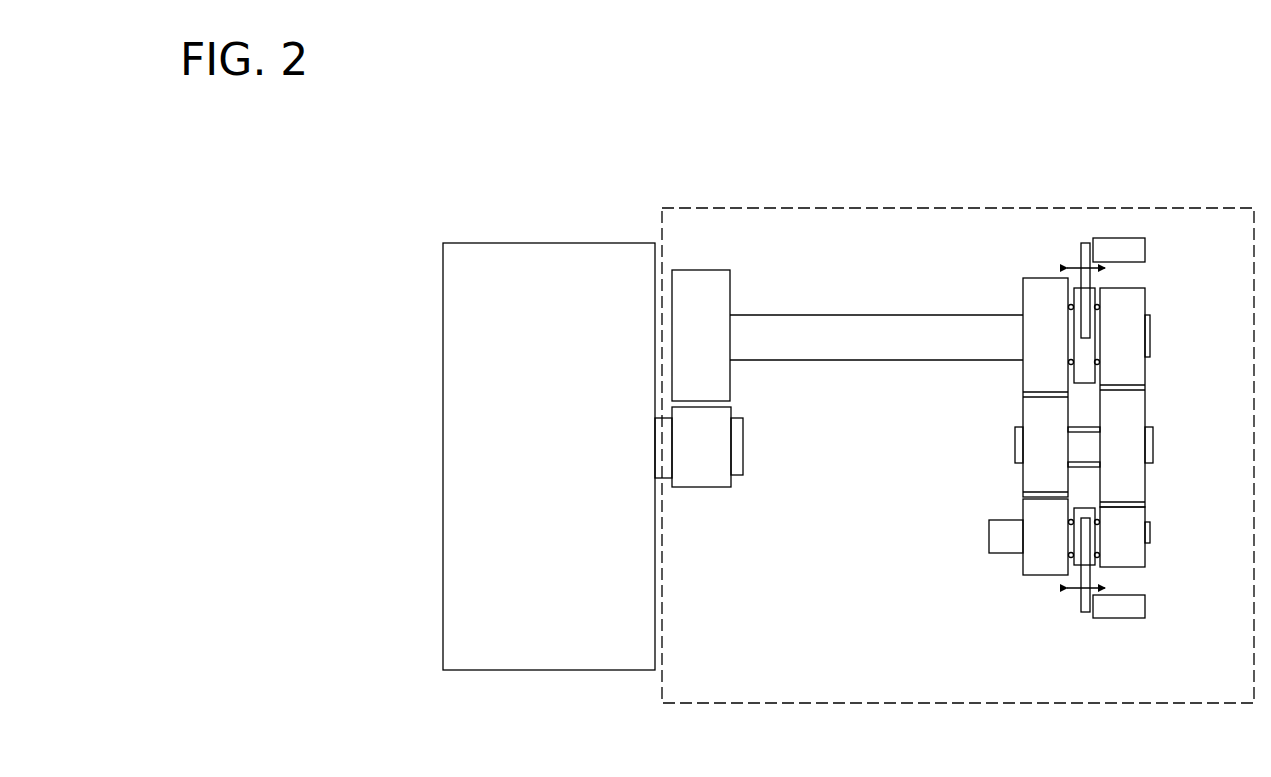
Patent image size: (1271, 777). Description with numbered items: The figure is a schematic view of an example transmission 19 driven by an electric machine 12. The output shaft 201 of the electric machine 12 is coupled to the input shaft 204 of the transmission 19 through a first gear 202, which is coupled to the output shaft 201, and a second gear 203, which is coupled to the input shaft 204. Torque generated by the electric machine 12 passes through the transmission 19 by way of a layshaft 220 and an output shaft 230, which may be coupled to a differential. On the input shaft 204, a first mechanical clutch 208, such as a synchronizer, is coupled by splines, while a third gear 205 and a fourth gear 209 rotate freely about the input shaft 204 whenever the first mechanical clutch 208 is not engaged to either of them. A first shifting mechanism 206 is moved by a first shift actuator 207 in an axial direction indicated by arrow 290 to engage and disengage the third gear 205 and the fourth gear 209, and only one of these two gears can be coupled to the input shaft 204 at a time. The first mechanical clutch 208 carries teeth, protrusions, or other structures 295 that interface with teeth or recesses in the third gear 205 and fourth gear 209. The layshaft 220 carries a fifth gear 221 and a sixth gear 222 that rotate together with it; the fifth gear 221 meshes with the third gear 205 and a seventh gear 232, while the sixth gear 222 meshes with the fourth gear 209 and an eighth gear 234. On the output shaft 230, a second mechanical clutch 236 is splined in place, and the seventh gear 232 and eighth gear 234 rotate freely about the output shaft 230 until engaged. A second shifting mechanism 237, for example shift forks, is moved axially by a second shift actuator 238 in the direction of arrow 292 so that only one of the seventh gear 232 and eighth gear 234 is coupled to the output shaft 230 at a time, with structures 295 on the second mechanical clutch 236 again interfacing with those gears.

The electric machine 12 is at (565, 469).
The transmission 19 is at (1052, 208).
The output shaft of electric machine 201 is at (743, 445).
The first gear 202 is at (700, 487).
The second gear 203 is at (700, 270).
The input shaft 204 is at (790, 314).
The third gear 205 is at (1050, 278).
The first shifting mechanism 206 is at (1082, 245).
The first shift actuator 207 is at (1135, 238).
The first mechanical clutch 208 is at (1095, 290).
The fourth gear 209 is at (1145, 293).
The layshaft 220 is at (1151, 435).
The fifth gear 221 is at (1023, 393).
The sixth gear 222 is at (1145, 389).
The output shaft 230 is at (1151, 531).
The seventh gear 232 is at (1023, 504).
The eighth gear 234 is at (1145, 505).
The second mechanical clutch 236 is at (1097, 562).
The second shifting mechanism 237 is at (1085, 612).
The second shift actuator 238 is at (1140, 618).
The arrow 290 is at (1066, 268).
The arrow 292 is at (1066, 590).
The teeth, protrusions, or other structures 295 is at (1069, 361).